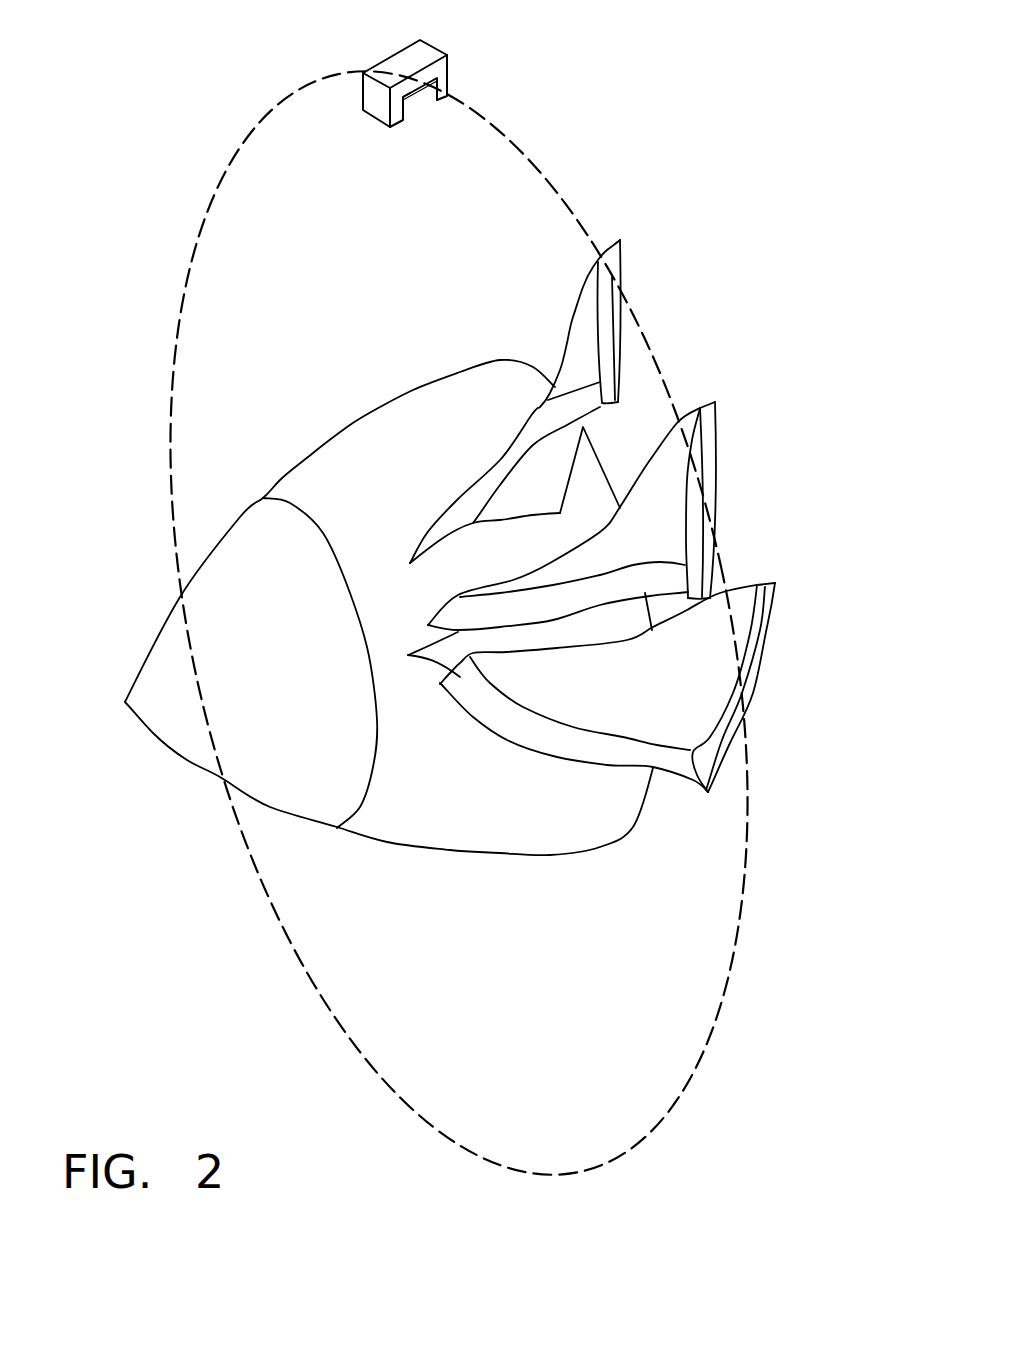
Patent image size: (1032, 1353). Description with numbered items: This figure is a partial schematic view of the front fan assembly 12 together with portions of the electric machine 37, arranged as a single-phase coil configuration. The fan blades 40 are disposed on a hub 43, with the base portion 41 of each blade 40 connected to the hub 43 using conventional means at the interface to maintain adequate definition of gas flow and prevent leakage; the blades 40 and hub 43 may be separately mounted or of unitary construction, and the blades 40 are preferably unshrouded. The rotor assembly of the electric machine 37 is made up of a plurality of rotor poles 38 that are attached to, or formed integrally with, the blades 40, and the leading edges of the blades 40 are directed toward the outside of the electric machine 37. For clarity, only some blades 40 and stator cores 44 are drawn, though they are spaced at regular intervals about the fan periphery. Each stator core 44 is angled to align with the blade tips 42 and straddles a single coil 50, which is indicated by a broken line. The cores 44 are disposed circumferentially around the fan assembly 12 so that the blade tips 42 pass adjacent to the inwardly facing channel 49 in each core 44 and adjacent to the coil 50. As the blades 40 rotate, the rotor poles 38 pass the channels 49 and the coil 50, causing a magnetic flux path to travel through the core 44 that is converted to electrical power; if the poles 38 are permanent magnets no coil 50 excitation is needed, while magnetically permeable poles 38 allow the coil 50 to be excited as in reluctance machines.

The front fan assembly 12 is at (222, 475).
The electric machine 37 is at (652, 90).
The rotor poles 38 is at (618, 344).
The fan blades 40 is at (605, 485).
The base portion 41 is at (437, 530).
The blade tips 42 is at (612, 240).
The hub 43 is at (485, 817).
The stator cores 44 is at (382, 105).
The inwardly facing channel 49 is at (421, 112).
The coil 50 is at (215, 175).